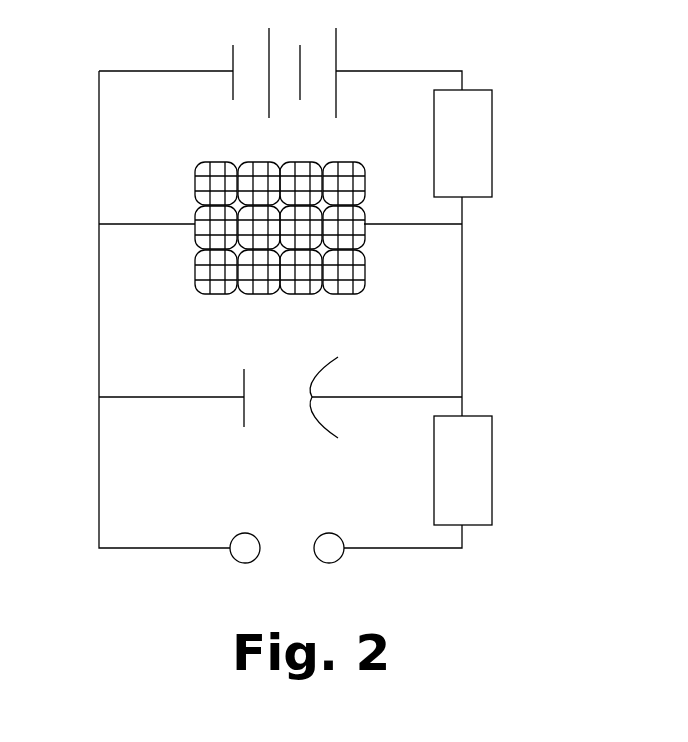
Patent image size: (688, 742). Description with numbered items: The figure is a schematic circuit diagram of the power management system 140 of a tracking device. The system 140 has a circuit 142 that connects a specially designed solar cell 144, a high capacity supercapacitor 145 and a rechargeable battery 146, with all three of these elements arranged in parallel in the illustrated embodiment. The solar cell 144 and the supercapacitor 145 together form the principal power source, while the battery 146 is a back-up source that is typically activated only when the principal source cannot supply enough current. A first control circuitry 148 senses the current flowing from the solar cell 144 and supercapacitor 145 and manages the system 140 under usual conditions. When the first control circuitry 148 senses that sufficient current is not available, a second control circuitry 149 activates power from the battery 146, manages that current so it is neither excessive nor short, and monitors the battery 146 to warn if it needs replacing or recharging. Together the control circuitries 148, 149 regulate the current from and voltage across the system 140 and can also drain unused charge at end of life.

The power management system 140 is at (543, 78).
The circuit 142 is at (99, 305).
The solar cell 144 is at (365, 272).
The high capacity supercapacitor 145 is at (244, 410).
The battery 146 is at (233, 60).
The first control circuitry 148 is at (492, 466).
The second control circuitry 149 is at (492, 153).